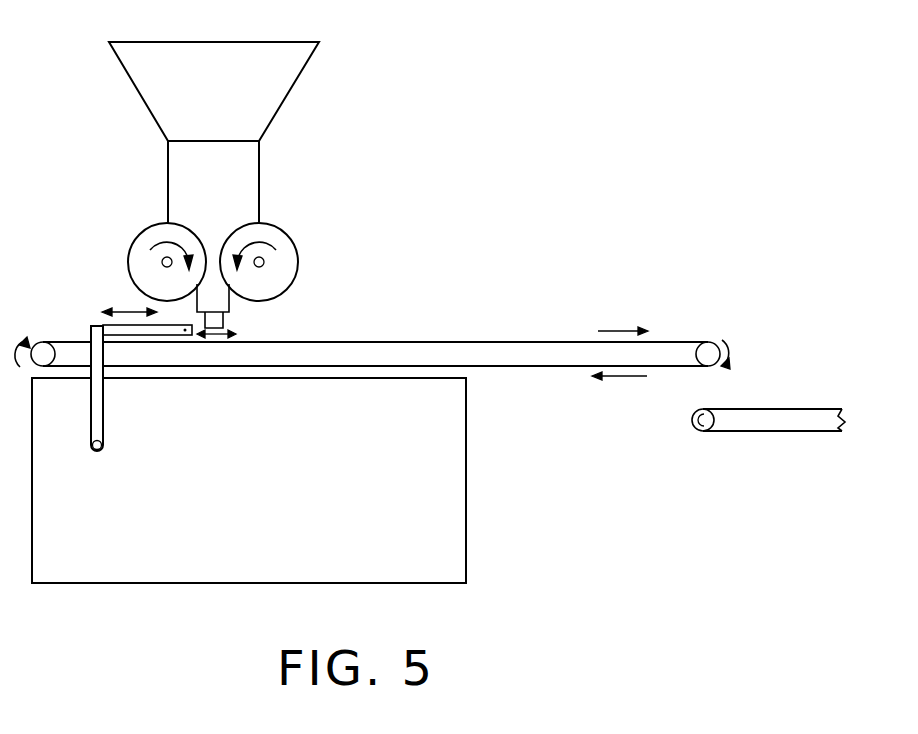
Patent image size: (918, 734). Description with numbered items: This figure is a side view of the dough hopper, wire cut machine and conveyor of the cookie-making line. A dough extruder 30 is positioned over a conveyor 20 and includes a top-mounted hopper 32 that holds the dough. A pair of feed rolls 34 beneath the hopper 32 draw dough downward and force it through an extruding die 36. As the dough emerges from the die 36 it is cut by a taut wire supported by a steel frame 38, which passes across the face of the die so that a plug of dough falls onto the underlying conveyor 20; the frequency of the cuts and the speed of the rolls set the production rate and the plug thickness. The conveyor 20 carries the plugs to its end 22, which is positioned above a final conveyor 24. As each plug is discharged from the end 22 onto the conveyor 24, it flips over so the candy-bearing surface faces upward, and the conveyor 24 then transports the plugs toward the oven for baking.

The conveyor 20 is at (487, 343).
The end 22 is at (710, 342).
The final conveyor 24 is at (757, 432).
The dough extruder 30 is at (260, 170).
The hopper 32 is at (303, 73).
The feed rolls 34 is at (134, 235).
The extruding die 36 is at (229, 318).
The steel frame 38 is at (97, 326).